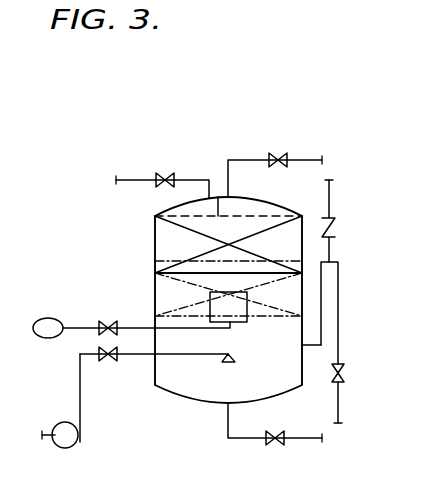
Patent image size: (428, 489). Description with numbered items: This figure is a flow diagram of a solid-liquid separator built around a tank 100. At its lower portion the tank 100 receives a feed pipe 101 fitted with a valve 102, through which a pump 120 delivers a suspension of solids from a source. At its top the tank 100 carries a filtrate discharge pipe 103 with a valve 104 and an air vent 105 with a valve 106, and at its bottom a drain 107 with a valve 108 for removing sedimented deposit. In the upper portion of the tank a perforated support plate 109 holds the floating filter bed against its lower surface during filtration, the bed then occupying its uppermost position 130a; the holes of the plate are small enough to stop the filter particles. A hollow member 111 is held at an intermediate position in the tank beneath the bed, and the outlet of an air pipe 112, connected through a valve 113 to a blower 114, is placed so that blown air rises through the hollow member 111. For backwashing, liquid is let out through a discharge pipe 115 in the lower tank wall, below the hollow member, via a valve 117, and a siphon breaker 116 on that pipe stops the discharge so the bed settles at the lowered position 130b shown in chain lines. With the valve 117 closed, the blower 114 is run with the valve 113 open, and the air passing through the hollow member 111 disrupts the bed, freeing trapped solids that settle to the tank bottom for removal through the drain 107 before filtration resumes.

The tank 100 is at (182, 398).
The feed pipe 101 is at (134, 356).
The valve 102 is at (81, 372).
The filtrate discharge pipe 103 is at (243, 159).
The valve 104 is at (279, 157).
The air vent 105 is at (132, 178).
The valve 106 is at (165, 174).
The drain 107 is at (240, 440).
The valve 108 is at (278, 446).
The perforated support plate 109 is at (218, 197).
The hollow member 111 is at (237, 323).
The air pipe 112 is at (81, 327).
The valve 113 is at (113, 321).
The blower 114 is at (44, 326).
The discharge pipe 115 is at (310, 348).
The siphon breaker 116 is at (335, 224).
The valve 117 is at (342, 376).
The pump 120 is at (72, 438).
The filter bed uppermost position 130a is at (165, 238).
The filter bed lowered position 130b is at (168, 290).